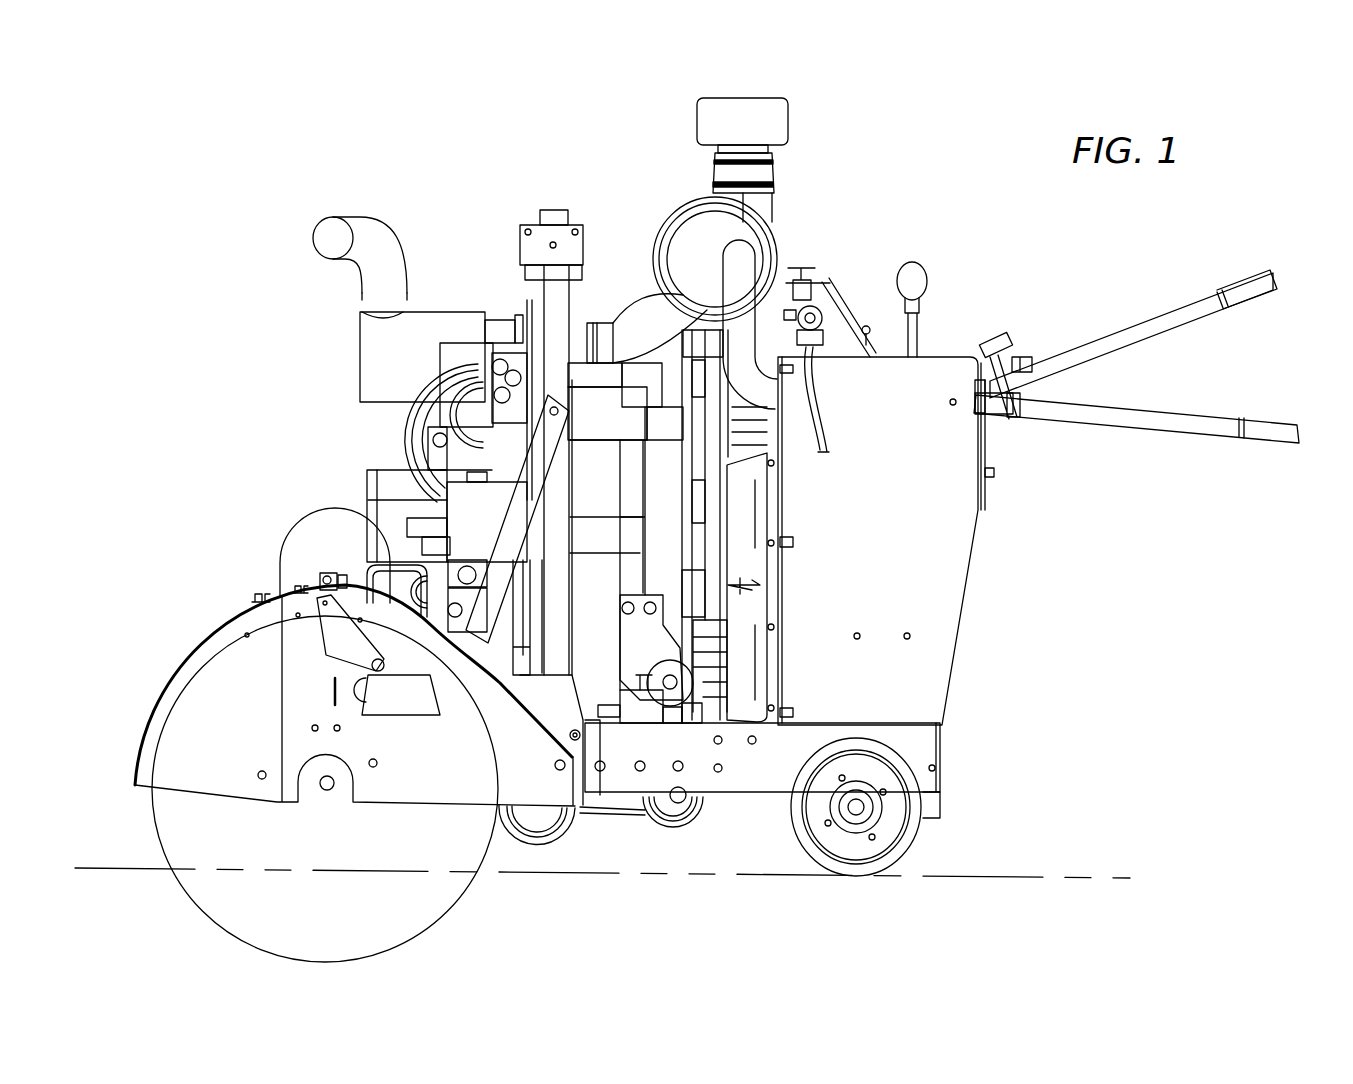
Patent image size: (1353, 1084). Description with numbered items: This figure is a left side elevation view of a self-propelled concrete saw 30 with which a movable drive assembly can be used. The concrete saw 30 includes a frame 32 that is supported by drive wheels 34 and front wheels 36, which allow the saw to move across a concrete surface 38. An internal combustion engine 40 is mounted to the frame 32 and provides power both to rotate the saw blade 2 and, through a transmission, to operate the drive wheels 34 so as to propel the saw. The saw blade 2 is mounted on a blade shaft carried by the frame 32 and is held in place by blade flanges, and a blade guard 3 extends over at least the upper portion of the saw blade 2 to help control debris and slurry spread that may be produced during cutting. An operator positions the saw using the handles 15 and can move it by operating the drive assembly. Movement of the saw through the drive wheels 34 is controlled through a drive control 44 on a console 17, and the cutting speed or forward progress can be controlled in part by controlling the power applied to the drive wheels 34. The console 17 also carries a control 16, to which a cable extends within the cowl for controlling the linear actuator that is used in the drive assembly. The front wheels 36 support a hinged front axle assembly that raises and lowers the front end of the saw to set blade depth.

The saw blade 2 is at (397, 918).
The blade guard 3 is at (193, 677).
The handles 15 is at (1245, 283).
The control 16 is at (845, 250).
The console 17 is at (935, 343).
The concrete saw 30 is at (848, 98).
The frame 32 is at (940, 748).
The drive wheels 34 is at (930, 818).
The front wheels 36 is at (560, 833).
The concrete surface 38 is at (1065, 875).
The internal combustion engine 40 is at (455, 210).
The drive control 44 is at (925, 265).